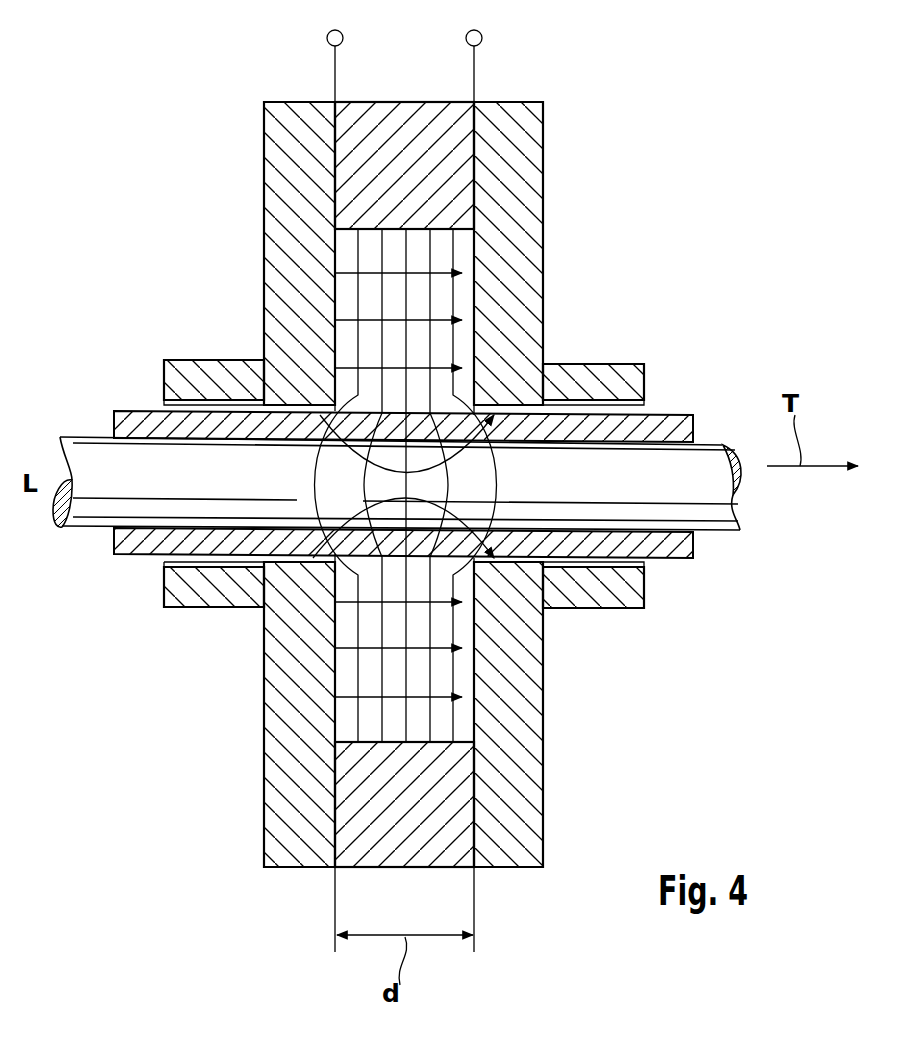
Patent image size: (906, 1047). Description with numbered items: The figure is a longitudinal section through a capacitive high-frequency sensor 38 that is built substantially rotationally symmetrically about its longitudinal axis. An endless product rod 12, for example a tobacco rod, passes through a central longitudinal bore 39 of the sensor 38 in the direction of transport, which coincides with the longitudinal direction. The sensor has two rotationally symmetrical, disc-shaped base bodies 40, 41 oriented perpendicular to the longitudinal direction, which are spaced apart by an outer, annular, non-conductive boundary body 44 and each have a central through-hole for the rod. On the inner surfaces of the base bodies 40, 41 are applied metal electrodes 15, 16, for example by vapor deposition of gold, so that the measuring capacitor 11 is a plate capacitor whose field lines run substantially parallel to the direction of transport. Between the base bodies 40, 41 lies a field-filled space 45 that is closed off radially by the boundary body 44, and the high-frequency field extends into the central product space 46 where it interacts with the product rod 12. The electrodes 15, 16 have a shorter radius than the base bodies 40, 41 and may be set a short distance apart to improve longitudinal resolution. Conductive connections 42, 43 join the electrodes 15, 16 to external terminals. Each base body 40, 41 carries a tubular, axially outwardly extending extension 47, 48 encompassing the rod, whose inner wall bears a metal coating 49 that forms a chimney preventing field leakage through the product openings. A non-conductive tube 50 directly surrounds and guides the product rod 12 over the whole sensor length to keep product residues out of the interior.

The high-frequency sensor 38 is at (576, 146).
The conductive connection 42 is at (333, 128).
The boundary body 44 is at (412, 125).
The conductive connection 43 is at (476, 135).
The metal coating 49 is at (240, 360).
The tubular extension 48 is at (605, 380).
The central longitudinal bore 39 is at (165, 385).
The tubular extension 47 is at (188, 578).
The tube 50 is at (672, 557).
The base body 40 is at (295, 783).
The base body 41 is at (525, 760).
The measuring capacitor 11 is at (316, 321).
The electrode 15 is at (335, 677).
The electrode 16 is at (476, 292).
The field-filled space 45 is at (395, 668).
The central product space 46 is at (380, 488).
The endless product rod 12 is at (718, 513).